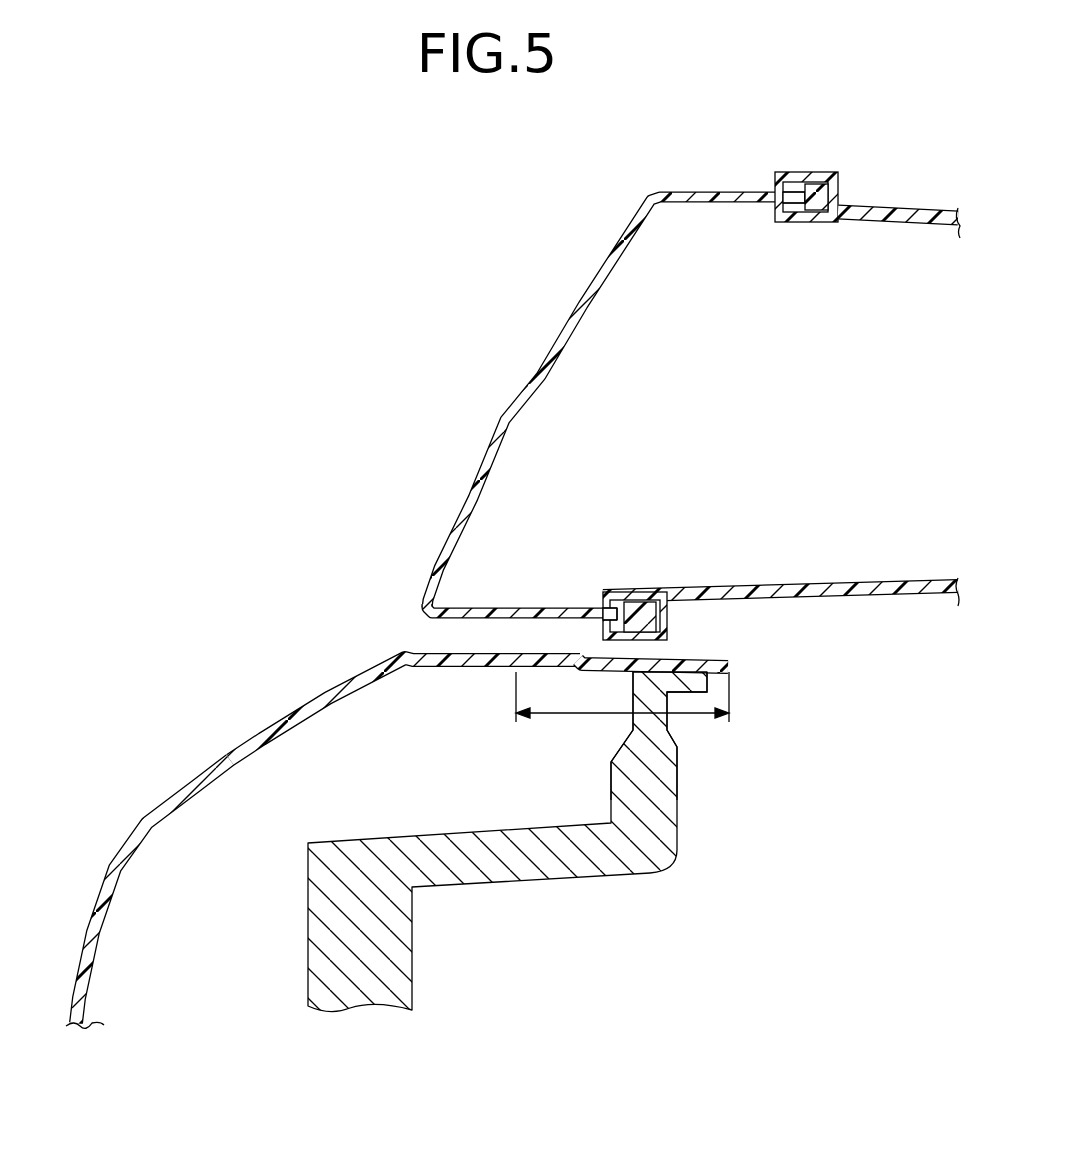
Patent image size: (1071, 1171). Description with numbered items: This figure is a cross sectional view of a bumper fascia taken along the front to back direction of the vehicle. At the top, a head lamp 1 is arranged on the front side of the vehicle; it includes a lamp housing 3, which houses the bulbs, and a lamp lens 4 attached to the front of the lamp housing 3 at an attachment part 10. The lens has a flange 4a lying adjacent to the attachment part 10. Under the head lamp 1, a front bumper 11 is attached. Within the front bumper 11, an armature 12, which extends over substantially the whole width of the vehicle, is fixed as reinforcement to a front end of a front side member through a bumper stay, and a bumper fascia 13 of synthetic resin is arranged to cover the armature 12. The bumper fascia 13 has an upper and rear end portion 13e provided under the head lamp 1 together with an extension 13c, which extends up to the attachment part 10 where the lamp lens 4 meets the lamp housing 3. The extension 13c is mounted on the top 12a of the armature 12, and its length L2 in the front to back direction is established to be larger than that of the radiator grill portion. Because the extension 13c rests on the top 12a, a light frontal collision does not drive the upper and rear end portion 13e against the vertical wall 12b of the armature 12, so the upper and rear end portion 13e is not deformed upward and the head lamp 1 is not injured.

The head lamp 1 is at (693, 392).
The lamp housing 3 is at (840, 586).
The lamp lens 4 is at (571, 327).
The flange of panel 4a is at (523, 606).
The attachment part 10 is at (628, 592).
The front bumper 11 is at (170, 787).
The armature 12 is at (538, 842).
The top of the armature 12a is at (658, 718).
The vertical wall of the armature 12b is at (637, 717).
The bumper fascia 13 is at (502, 684).
The extension 13c is at (680, 657).
The upper and rear end portion 13e is at (443, 668).
The length of extension L2 is at (622, 697).